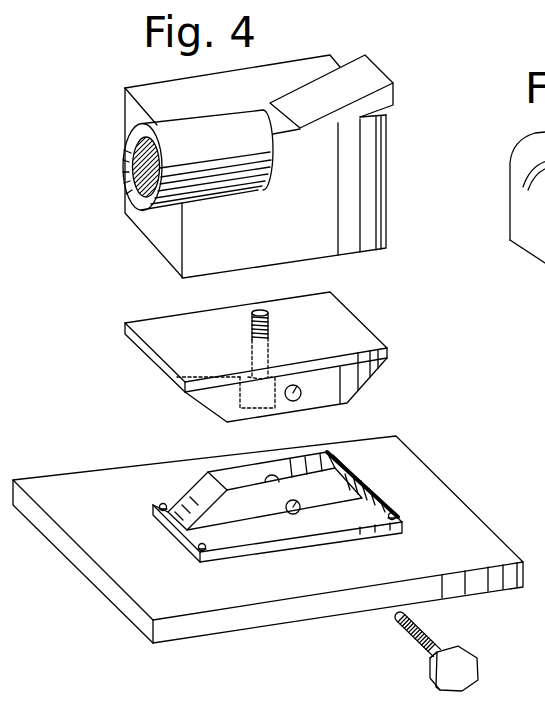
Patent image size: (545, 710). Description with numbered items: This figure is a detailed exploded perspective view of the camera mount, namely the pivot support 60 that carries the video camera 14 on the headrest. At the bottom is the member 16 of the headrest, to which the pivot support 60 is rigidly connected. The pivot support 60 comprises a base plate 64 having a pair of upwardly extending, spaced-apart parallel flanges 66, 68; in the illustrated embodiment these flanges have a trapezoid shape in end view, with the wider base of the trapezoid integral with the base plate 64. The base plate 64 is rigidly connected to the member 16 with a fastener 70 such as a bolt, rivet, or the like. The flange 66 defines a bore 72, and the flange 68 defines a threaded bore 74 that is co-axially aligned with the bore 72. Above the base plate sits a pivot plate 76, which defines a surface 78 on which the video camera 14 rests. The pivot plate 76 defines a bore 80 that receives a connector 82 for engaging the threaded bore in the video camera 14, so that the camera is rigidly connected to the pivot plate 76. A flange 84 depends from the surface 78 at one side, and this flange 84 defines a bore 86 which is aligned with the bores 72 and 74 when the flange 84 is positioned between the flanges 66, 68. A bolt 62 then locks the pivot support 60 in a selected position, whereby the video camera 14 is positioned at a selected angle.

The video camera 14 is at (372, 142).
The member 16 is at (90, 507).
The pivot support 60 is at (150, 410).
The bolt 62 is at (468, 667).
The base plate 64 is at (185, 543).
The flange 66 is at (345, 513).
The flange 68 is at (332, 456).
The fastener 70 is at (163, 503).
The bore 72 is at (294, 514).
The threaded bore 74 is at (270, 480).
The pivot plate 76 is at (360, 287).
The surface 78 is at (335, 337).
The bore 80 is at (253, 338).
The connector 82 is at (178, 377).
The flange 84 is at (358, 375).
The bore 86 is at (302, 389).